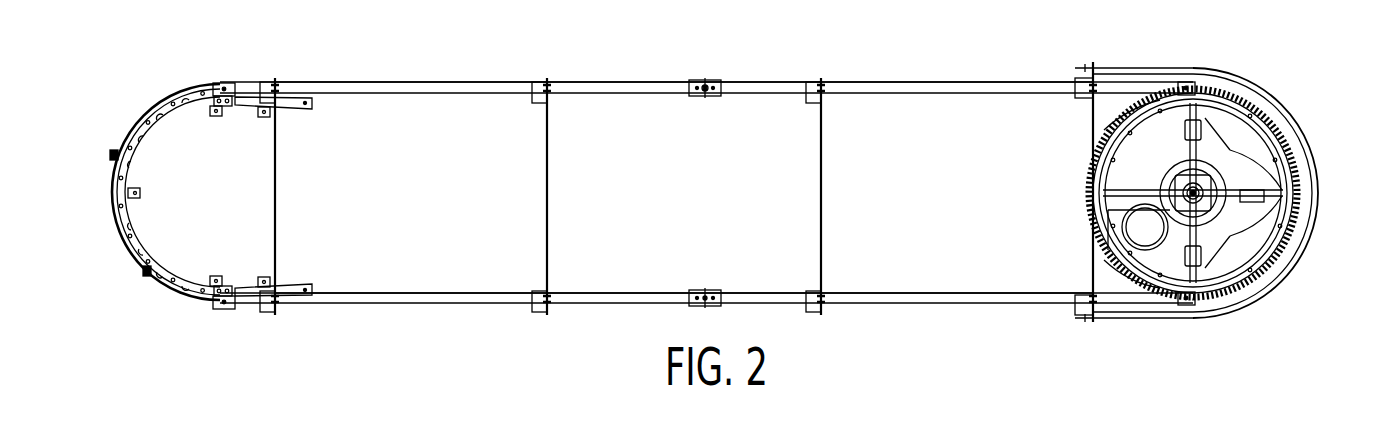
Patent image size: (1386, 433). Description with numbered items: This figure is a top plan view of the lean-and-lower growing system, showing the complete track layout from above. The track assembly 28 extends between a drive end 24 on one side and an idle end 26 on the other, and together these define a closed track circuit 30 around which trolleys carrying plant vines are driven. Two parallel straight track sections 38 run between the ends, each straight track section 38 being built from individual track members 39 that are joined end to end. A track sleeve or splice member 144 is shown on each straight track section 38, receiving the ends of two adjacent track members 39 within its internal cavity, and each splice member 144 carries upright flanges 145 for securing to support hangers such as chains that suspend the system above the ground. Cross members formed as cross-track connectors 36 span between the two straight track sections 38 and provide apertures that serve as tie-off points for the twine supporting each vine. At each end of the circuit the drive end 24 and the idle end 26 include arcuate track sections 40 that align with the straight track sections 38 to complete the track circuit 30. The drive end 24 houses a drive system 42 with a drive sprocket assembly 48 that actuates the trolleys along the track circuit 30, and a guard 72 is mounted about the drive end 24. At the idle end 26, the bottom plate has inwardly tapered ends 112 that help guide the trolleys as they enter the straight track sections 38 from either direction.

The drive end 24 is at (1257, 82).
The idle end 26 is at (143, 112).
The track assembly 28 is at (387, 316).
The track circuit 30 is at (858, 82).
The cross-track connector 36 is at (277, 173).
The straight track sections 38 is at (406, 82).
The track members 39 is at (610, 82).
The arcuate track sections 40 is at (131, 152).
The drive system 42 is at (1156, 198).
The drive sprocket assembly 48 is at (1279, 264).
The guard 72 is at (1318, 220).
The inwardly tapered ends 112 is at (313, 99).
The splice member 144 is at (711, 80).
The upright flanges 145 is at (708, 96).